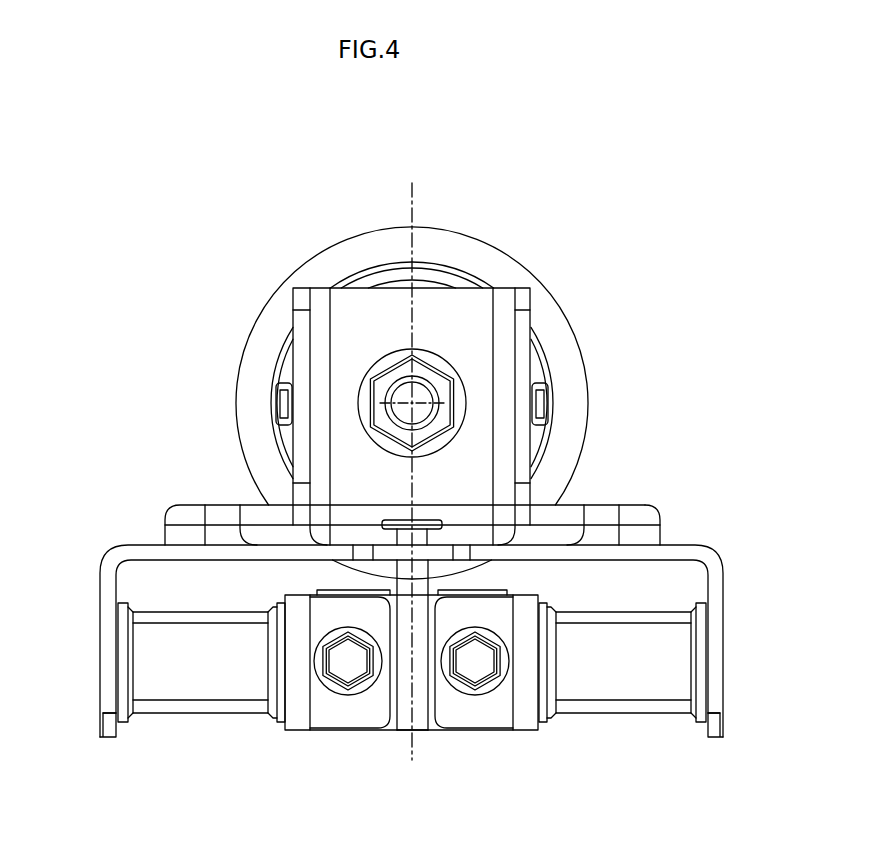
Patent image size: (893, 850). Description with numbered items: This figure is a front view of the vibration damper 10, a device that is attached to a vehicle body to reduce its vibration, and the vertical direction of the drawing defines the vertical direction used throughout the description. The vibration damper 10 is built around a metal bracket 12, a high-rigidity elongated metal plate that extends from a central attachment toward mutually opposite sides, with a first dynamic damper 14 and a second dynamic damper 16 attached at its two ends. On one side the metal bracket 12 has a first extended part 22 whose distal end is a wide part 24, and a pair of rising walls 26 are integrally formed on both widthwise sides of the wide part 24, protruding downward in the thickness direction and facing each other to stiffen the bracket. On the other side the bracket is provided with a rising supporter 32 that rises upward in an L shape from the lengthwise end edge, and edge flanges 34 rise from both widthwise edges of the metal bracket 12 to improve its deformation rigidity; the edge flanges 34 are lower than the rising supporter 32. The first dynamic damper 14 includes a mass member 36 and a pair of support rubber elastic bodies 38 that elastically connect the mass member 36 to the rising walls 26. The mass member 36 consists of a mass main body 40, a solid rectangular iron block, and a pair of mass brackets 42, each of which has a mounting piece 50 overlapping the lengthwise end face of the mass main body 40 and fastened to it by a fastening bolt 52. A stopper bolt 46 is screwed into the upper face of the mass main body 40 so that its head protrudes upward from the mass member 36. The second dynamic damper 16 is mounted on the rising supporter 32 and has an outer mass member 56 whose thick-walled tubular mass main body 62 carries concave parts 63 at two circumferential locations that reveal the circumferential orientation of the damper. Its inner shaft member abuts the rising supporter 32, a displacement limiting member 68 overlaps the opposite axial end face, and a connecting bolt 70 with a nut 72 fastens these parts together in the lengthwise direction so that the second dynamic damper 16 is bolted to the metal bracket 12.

The vibration damper 10 is at (600, 254).
The metal bracket 12 is at (710, 518).
The first dynamic damper 14 is at (208, 746).
The second dynamic damper 16 is at (377, 252).
The first extended part 22 is at (148, 532).
The wide part 24 is at (232, 552).
The rising walls 26 is at (110, 648).
The rising supporter 32 is at (470, 455).
The edge flanges 34 is at (298, 352).
The mass member 36 is at (424, 742).
The support rubber elastic bodies 38 is at (208, 642).
The mass main body 40 is at (400, 715).
The mass brackets 42 is at (297, 742).
The stopper bolt 46 is at (410, 530).
The mounting piece 50 is at (340, 713).
The fastening bolt 52 is at (350, 665).
The outer mass member 56 is at (466, 260).
The mass main body 62 is at (428, 276).
The concave parts 63 is at (286, 410).
The displacement limiting member 68 is at (337, 266).
The connecting bolt 70 is at (423, 395).
The nut 72 is at (385, 392).